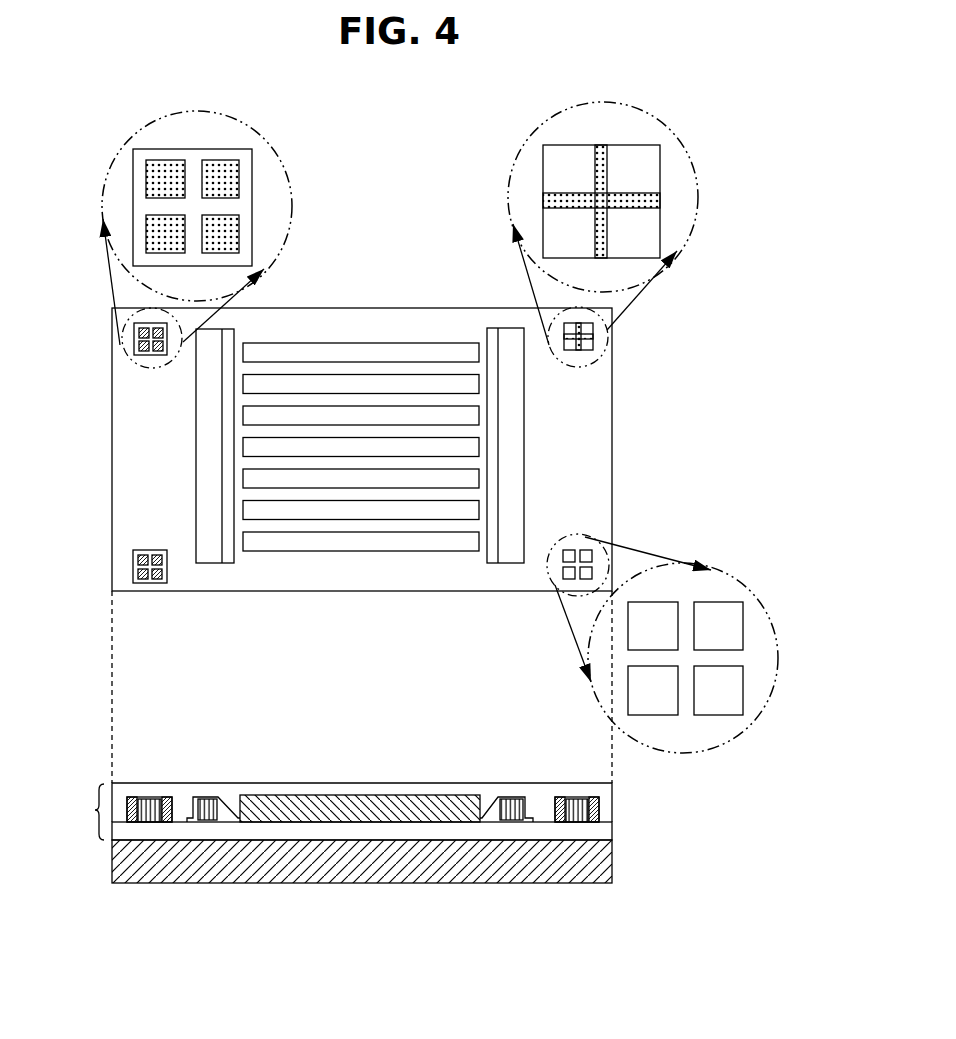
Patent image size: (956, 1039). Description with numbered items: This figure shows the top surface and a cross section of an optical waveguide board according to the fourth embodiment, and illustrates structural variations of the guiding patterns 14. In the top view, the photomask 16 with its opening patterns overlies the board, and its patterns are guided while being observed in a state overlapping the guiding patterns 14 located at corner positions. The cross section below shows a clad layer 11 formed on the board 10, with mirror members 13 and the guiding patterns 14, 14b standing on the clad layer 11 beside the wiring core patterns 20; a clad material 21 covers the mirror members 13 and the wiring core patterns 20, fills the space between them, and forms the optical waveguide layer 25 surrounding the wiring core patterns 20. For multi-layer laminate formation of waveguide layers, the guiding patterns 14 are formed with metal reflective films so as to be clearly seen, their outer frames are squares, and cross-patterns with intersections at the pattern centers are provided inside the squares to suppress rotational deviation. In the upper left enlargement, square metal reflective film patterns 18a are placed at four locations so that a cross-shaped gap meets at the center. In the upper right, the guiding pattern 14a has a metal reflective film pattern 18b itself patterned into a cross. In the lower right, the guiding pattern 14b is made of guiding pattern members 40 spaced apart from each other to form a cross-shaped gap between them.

The board 10 is at (613, 853).
The clad layer 11 is at (613, 828).
The mirror members 13 is at (207, 797).
The guiding patterns 14 is at (134, 332).
The guiding pattern 14a is at (593, 327).
The guiding pattern 14b is at (593, 553).
The photomask 16 is at (415, 325).
The square metal reflective film patterns 18a is at (218, 182).
The metal reflective film pattern 18b is at (600, 167).
The wiring core patterns 20 is at (341, 795).
The clad material 21 is at (600, 801).
The optical waveguide layer 25 is at (84, 812).
The guiding pattern members 40 is at (661, 600).